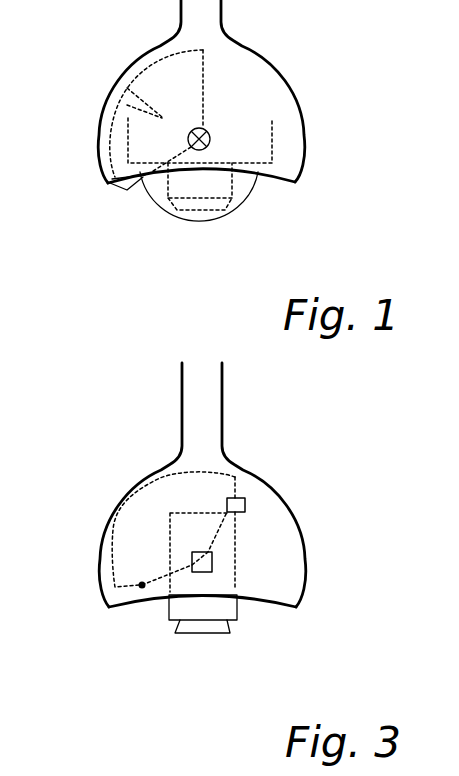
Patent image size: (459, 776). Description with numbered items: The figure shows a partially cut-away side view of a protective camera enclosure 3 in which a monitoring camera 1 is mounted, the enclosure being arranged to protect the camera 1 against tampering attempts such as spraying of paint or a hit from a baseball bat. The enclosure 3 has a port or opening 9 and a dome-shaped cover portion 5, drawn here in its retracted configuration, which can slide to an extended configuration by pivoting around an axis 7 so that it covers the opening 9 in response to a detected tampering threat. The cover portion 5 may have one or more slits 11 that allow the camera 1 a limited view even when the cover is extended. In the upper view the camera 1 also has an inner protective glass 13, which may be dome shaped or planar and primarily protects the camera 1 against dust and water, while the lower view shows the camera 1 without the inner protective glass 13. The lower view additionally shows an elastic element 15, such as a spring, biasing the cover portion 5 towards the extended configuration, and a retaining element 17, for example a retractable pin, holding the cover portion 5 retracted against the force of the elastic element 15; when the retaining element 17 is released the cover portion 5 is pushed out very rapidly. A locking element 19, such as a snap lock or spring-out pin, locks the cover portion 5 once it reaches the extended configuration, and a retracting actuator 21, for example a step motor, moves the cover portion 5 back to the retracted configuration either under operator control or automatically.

In FIG. 1, the monitoring camera 1 is at (262, 145).
In FIG. 3, the monitoring camera 1 is at (200, 630).
In FIG. 1, the protective camera enclosure 3 is at (306, 162).
In FIG. 3, the protective camera enclosure 3 is at (292, 498).
In FIG. 1, the cover portion 5 is at (117, 152).
In FIG. 3, the cover portion 5 is at (130, 503).
In FIG. 1, the axis 7 is at (207, 133).
In FIG. 1, the opening 9 is at (201, 149).
In FIG. 3, the opening 9 is at (218, 538).
In FIG. 1, the slit 11 is at (122, 97).
In FIG. 1, the inner protective glass 13 is at (207, 222).
In FIG. 3, the elastic element 15 is at (243, 497).
In FIG. 3, the retaining element 17 is at (142, 585).
In FIG. 3, the locking element 19 is at (297, 595).
In FIG. 3, the retracting actuator 21 is at (212, 553).